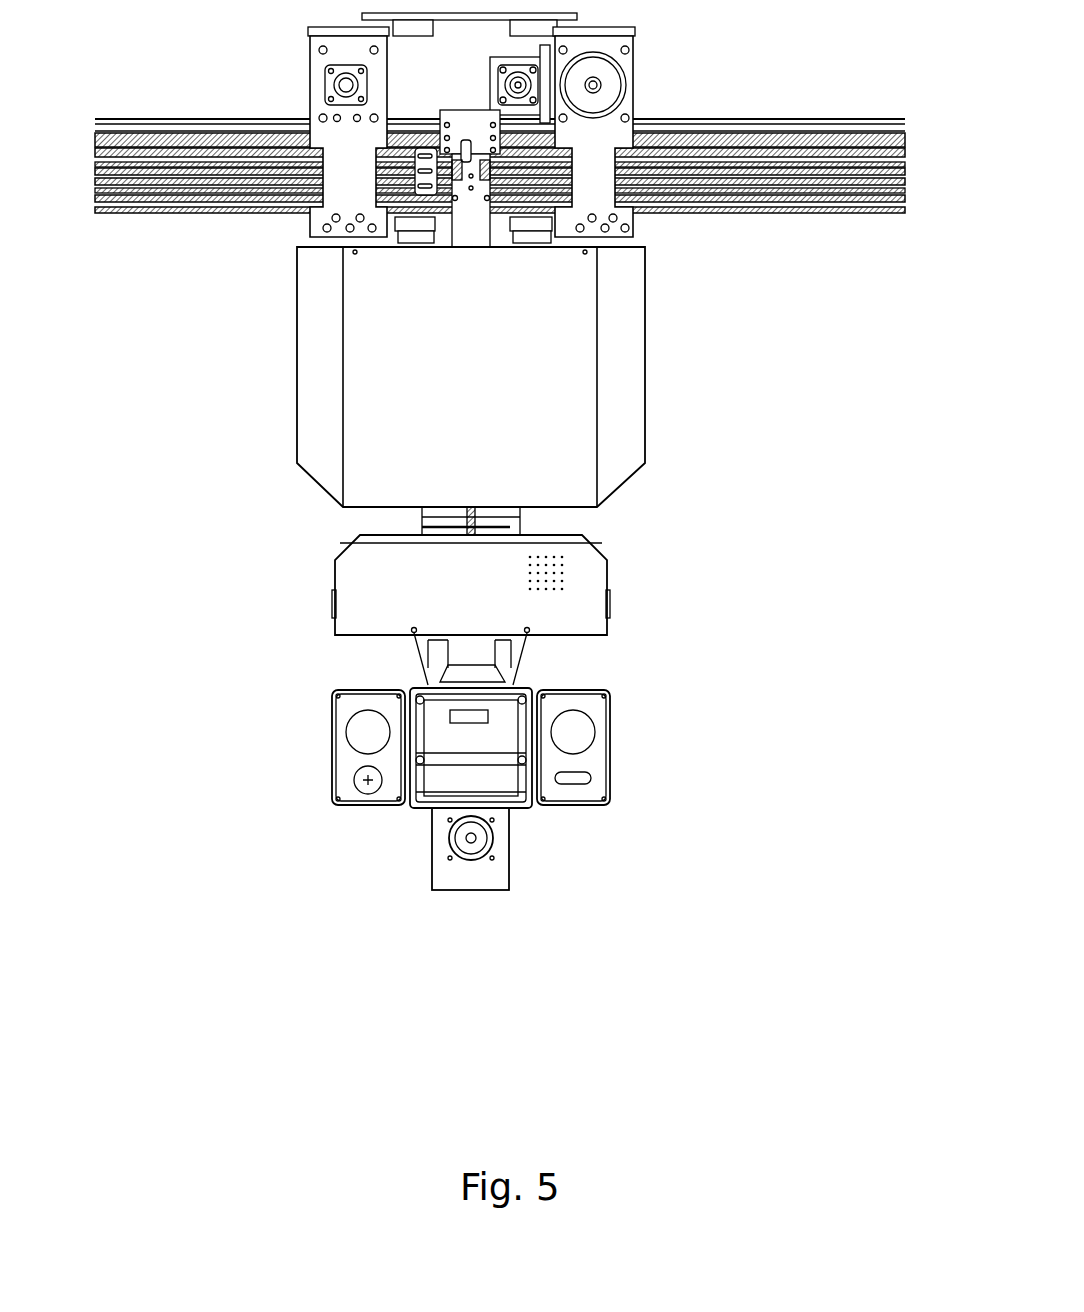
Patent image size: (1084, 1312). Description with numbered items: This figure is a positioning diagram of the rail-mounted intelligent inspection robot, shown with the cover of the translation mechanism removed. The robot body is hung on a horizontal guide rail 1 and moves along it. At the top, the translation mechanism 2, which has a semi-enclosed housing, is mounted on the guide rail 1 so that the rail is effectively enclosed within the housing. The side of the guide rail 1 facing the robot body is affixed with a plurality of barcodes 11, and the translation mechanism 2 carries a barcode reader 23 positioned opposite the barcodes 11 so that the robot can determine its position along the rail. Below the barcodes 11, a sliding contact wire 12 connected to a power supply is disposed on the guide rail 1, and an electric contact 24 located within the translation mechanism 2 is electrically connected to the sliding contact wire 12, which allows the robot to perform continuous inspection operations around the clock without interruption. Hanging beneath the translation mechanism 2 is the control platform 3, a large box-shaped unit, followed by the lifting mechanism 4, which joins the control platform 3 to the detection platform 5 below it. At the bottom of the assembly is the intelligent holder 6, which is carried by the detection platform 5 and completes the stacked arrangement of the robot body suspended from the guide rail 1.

The guide rail 1 is at (500, 168).
The barcodes 11 is at (680, 140).
The sliding contact wire 12 is at (672, 185).
The translation mechanism 2 is at (318, 72).
The barcode reader 23 is at (462, 127).
The electric contact 24 is at (588, 238).
The control platform 3 is at (373, 372).
The lifting mechanism 4 is at (520, 520).
The detection platform 5 is at (360, 594).
The intelligent holder 6 is at (495, 763).